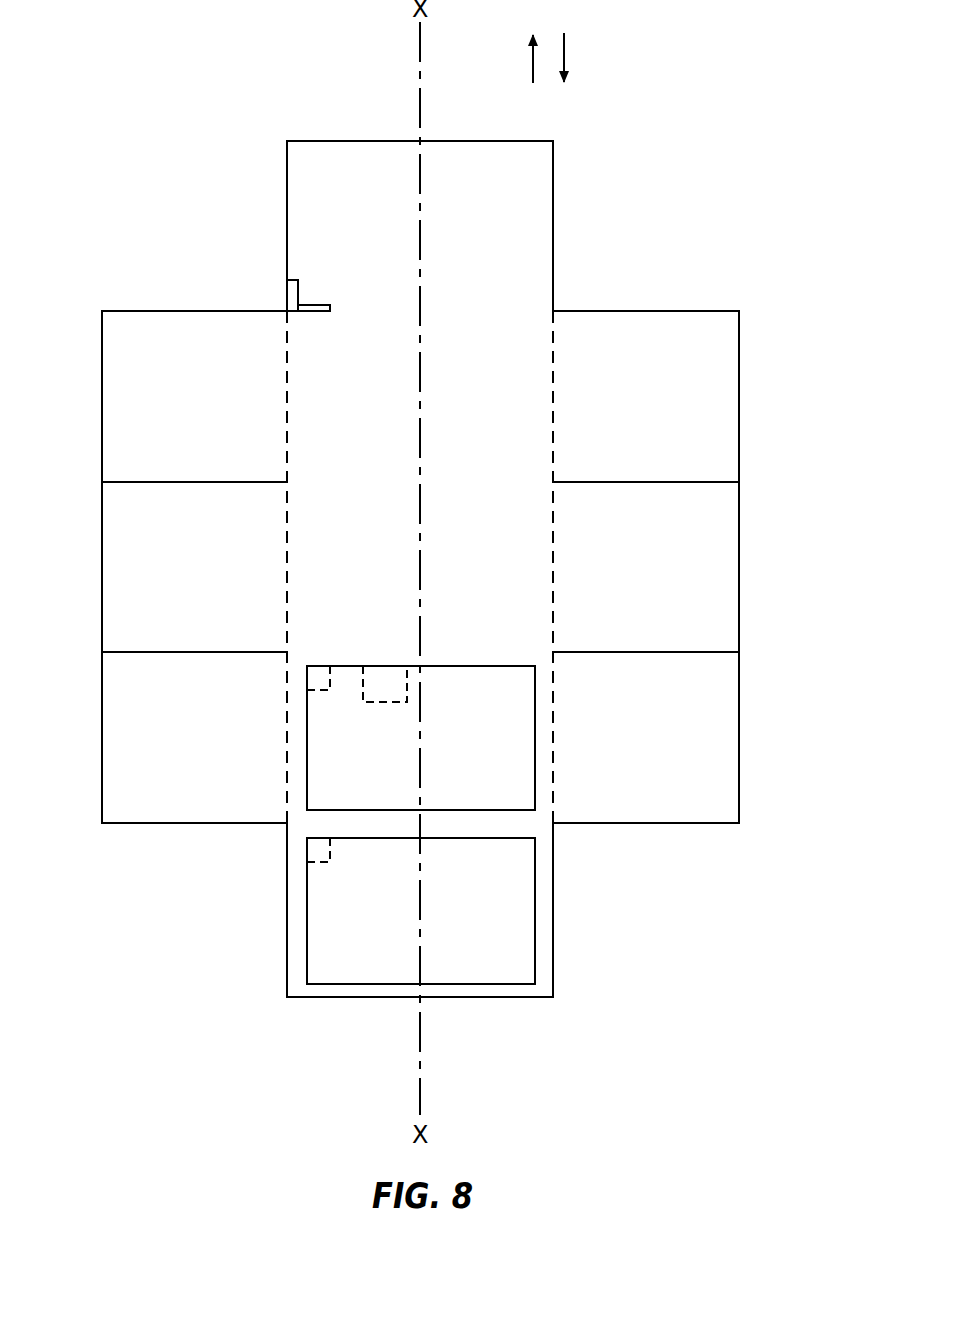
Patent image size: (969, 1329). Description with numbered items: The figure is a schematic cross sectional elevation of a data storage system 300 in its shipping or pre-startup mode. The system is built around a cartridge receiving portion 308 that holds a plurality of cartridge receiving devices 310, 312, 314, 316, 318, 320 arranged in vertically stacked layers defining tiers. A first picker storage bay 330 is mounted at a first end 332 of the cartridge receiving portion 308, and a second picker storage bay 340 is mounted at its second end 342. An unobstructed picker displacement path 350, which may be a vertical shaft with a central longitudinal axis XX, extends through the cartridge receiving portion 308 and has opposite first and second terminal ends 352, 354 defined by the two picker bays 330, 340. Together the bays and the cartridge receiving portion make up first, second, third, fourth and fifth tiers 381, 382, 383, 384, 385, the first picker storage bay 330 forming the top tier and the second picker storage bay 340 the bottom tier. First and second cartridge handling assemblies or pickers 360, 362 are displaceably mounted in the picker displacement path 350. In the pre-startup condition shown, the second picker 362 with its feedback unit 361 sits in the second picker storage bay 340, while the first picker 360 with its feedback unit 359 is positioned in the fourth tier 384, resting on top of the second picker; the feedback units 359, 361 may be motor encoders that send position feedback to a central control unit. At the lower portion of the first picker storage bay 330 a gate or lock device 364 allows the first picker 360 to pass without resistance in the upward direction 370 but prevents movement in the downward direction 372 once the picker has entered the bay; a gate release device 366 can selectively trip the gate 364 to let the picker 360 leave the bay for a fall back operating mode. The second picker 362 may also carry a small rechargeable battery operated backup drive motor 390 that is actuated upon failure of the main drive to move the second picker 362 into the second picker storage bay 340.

The data storage system 300 is at (190, 70).
The cartridge receiving portion 308 is at (694, 308).
The cartridge receiving device 310 is at (113, 406).
The cartridge receiving device 312 is at (727, 406).
The cartridge receiving device 314 is at (113, 575).
The cartridge receiving device 316 is at (727, 576).
The cartridge receiving device 318 is at (113, 745).
The cartridge receiving device 320 is at (727, 748).
The first picker storage bay 330 is at (287, 222).
The first end 332 is at (195, 310).
The second picker storage bay 340 is at (287, 912).
The second end 342 is at (195, 824).
The picker displacement path 350 is at (487, 350).
The first terminal end 352 is at (318, 152).
The second terminal end 354 is at (304, 992).
The feedback unit 359 is at (320, 672).
The first picker 360 is at (483, 676).
The feedback unit 361 is at (306, 850).
The second picker 362 is at (530, 937).
The gate or lock device 364 is at (325, 304).
The gate release device 366 is at (290, 297).
The upward direction 370 is at (533, 68).
The downward direction 372 is at (566, 45).
The first tier 381 is at (556, 222).
The second tier 382 is at (742, 354).
The third tier 383 is at (742, 524).
The fourth tier 384 is at (742, 695).
The fifth tier 385 is at (557, 893).
The backup drive motor 390 is at (386, 666).